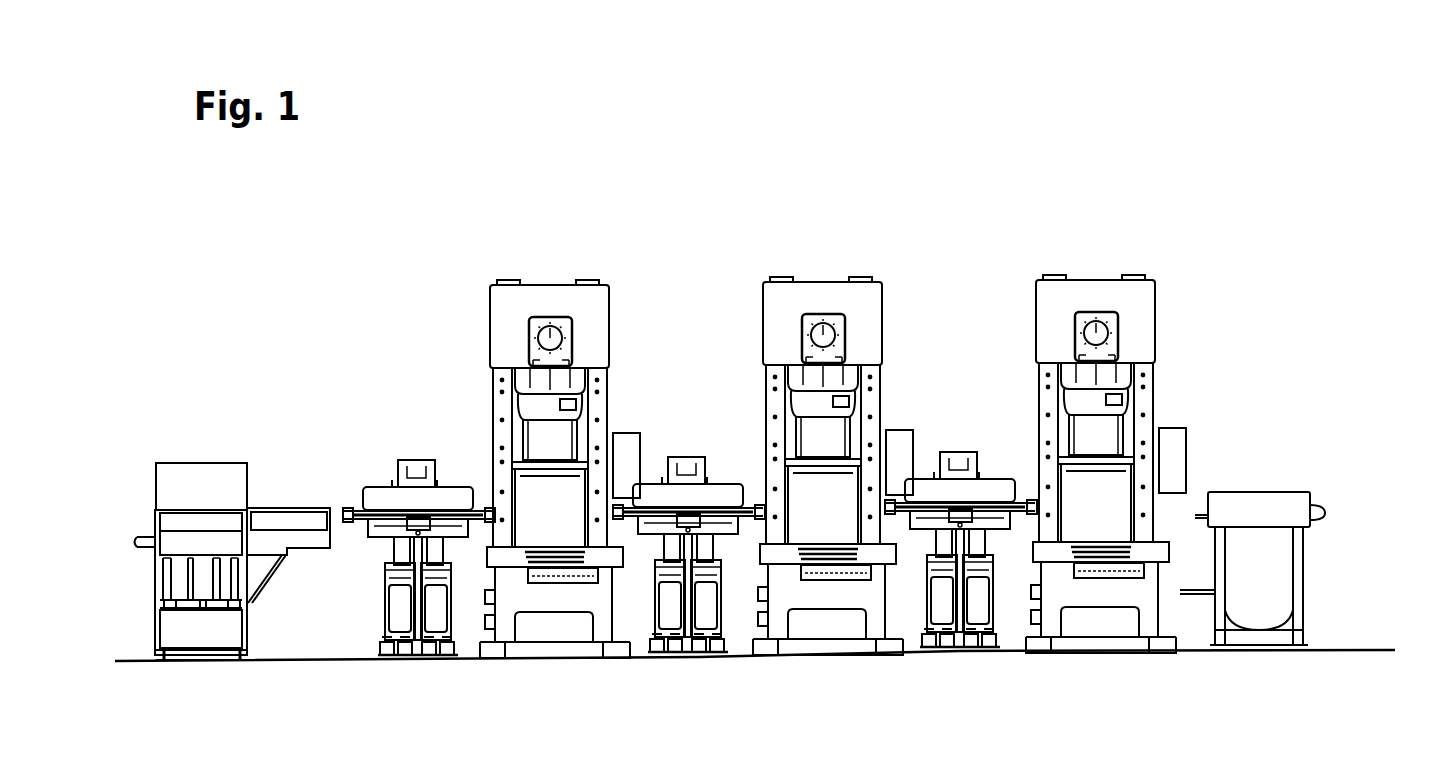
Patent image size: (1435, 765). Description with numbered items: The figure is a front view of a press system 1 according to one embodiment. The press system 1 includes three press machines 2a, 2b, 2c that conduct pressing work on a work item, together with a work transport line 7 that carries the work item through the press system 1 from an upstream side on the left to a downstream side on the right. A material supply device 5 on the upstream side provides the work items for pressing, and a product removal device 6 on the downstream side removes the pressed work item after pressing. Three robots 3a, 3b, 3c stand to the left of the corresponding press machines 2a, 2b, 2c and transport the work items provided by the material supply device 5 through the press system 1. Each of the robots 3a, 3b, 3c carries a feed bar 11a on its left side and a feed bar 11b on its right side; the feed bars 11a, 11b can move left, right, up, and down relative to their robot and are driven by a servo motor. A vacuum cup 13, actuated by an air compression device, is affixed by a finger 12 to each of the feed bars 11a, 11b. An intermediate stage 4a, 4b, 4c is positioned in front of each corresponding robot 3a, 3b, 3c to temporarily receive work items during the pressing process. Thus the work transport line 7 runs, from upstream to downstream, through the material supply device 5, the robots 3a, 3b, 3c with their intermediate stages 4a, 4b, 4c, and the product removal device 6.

The press system 1 is at (730, 230).
The press machine 2a is at (548, 266).
The press machine 2b is at (822, 262).
The press machine 2c is at (1092, 258).
The robot 3a is at (418, 445).
The robot 3b is at (690, 443).
The robot 3c is at (962, 440).
The intermediate stage 4a is at (412, 652).
The intermediate stage 4b is at (682, 650).
The intermediate stage 4c is at (952, 645).
The material supply device 5 is at (222, 450).
The product removal device 6 is at (1252, 478).
The work transport line 7 is at (1327, 474).
The feed bar 11a is at (396, 545).
The feed bar 11b is at (440, 545).
The finger 12 is at (350, 512).
The vacuum cup 13 is at (368, 528).